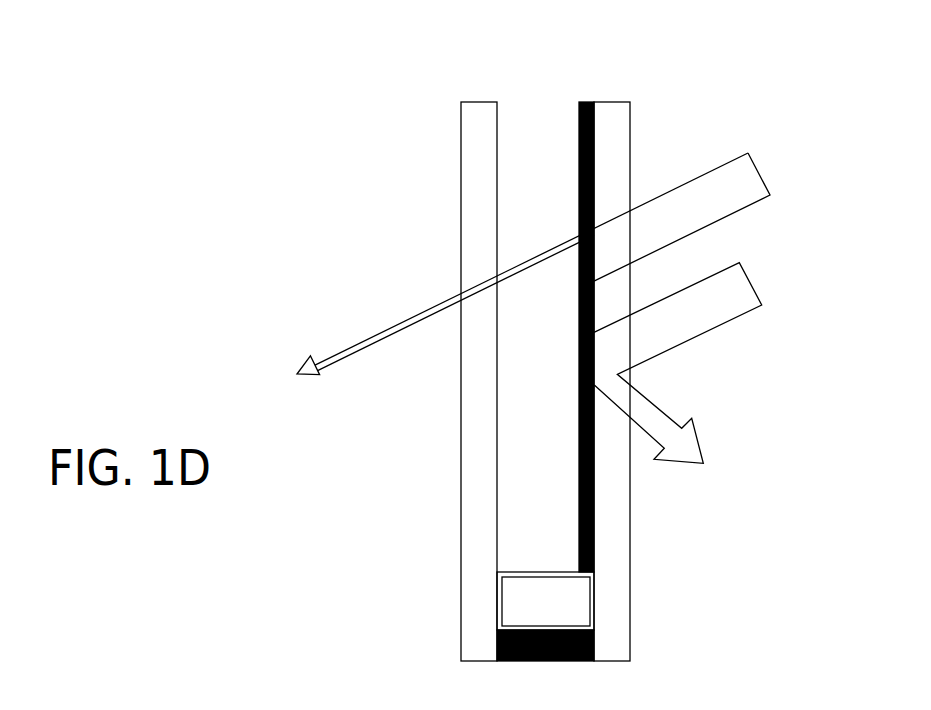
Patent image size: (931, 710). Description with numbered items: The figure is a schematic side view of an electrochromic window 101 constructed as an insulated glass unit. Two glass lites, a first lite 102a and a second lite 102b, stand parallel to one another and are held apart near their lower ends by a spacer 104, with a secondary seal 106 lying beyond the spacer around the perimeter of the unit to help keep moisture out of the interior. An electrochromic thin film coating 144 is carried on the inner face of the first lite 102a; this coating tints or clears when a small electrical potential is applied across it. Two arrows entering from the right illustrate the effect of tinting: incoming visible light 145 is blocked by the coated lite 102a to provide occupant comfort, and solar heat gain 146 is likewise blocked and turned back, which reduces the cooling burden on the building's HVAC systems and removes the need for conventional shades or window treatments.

The electrochromic window 101 is at (352, 84).
The first lite 102a is at (613, 112).
The second lite 102b is at (478, 109).
The electrochromic thin film coating 144 is at (588, 109).
The spacer 104 is at (578, 598).
The secondary seal 106 is at (592, 648).
The visible light 145 is at (755, 176).
The solar heat gain 146 is at (755, 295).